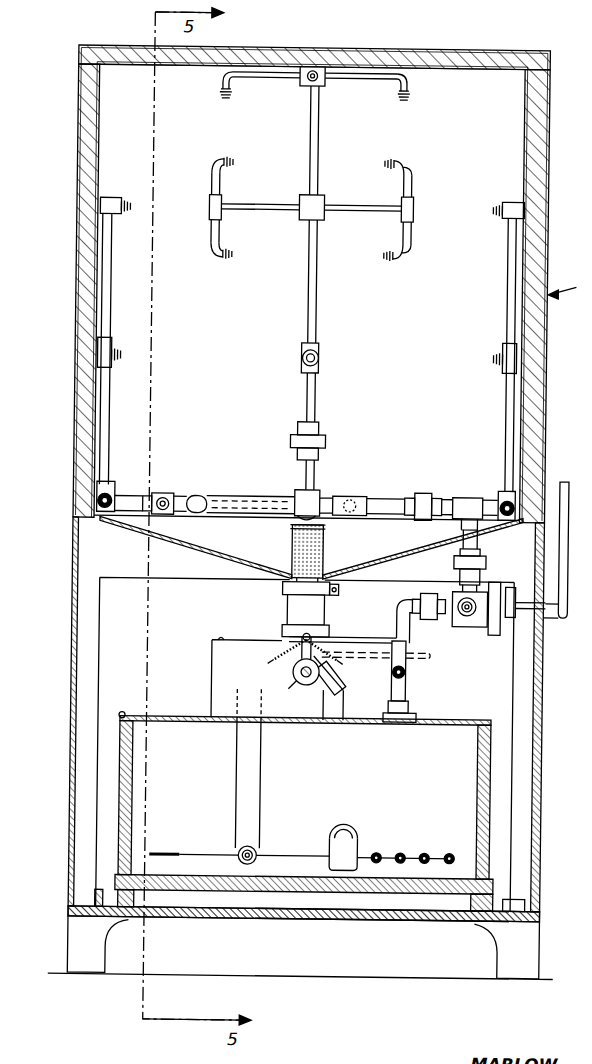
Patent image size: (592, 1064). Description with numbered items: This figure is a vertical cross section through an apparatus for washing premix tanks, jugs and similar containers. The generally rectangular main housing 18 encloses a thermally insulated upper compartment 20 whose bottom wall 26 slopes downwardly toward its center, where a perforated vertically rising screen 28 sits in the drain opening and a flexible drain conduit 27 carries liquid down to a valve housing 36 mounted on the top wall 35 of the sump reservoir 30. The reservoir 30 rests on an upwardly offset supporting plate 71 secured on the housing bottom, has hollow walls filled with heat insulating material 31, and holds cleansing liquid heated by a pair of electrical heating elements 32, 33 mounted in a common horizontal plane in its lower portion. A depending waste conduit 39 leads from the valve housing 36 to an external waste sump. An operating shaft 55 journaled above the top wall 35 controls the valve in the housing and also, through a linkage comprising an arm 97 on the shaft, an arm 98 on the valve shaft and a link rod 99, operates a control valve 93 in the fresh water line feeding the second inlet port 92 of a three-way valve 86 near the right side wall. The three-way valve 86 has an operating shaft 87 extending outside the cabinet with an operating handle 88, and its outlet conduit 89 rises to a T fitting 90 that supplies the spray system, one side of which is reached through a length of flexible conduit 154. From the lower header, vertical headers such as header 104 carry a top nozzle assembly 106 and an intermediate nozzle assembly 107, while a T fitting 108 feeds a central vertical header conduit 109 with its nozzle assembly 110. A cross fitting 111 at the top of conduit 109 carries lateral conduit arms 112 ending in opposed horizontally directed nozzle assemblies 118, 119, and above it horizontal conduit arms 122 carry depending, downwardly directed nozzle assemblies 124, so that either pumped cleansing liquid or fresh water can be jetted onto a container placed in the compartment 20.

The main housing 18 is at (553, 62).
The upper compartment 20 is at (194, 70).
The bottom wall 26 is at (217, 551).
The drain conduit 27 is at (291, 603).
The perforated screen 28 is at (332, 552).
The sump reservoir 30 is at (429, 775).
The heat insulating material 31 is at (500, 796).
The electrical heating element 32 is at (162, 850).
The electrical heating element 33 is at (204, 848).
The top wall 35 is at (454, 714).
The valve housing 36 is at (220, 660).
The waste conduit 39 is at (272, 787).
The operating shaft 55 is at (311, 682).
The supporting plate 71 is at (346, 913).
The three-way valve 86 is at (438, 640).
The operating shaft 87 is at (530, 597).
The operating handle 88 is at (568, 474).
The conduit 89 is at (482, 548).
The T fitting 90 is at (472, 490).
The second inlet port 92 is at (477, 622).
The control valve 93 is at (420, 672).
The arm 97 is at (302, 651).
The arm 98 is at (414, 653).
The link rod 99 is at (356, 632).
The vertical header 104 is at (508, 417).
The top nozzle assembly 106 is at (491, 200).
The intermediate nozzle assembly 107 is at (494, 352).
The T fitting 108 is at (324, 486).
The vertical header conduit 109 is at (320, 316).
The nozzle assembly 110 is at (324, 354).
The cross fitting 111 is at (324, 196).
The conduit arm 112 is at (350, 212).
The nozzle assembly 118 is at (399, 156).
The nozzle assembly 119 is at (400, 257).
The horizontal conduit arm 122 is at (352, 80).
The nozzle assembly 124 is at (394, 98).
The flexible conduit 154 is at (211, 492).